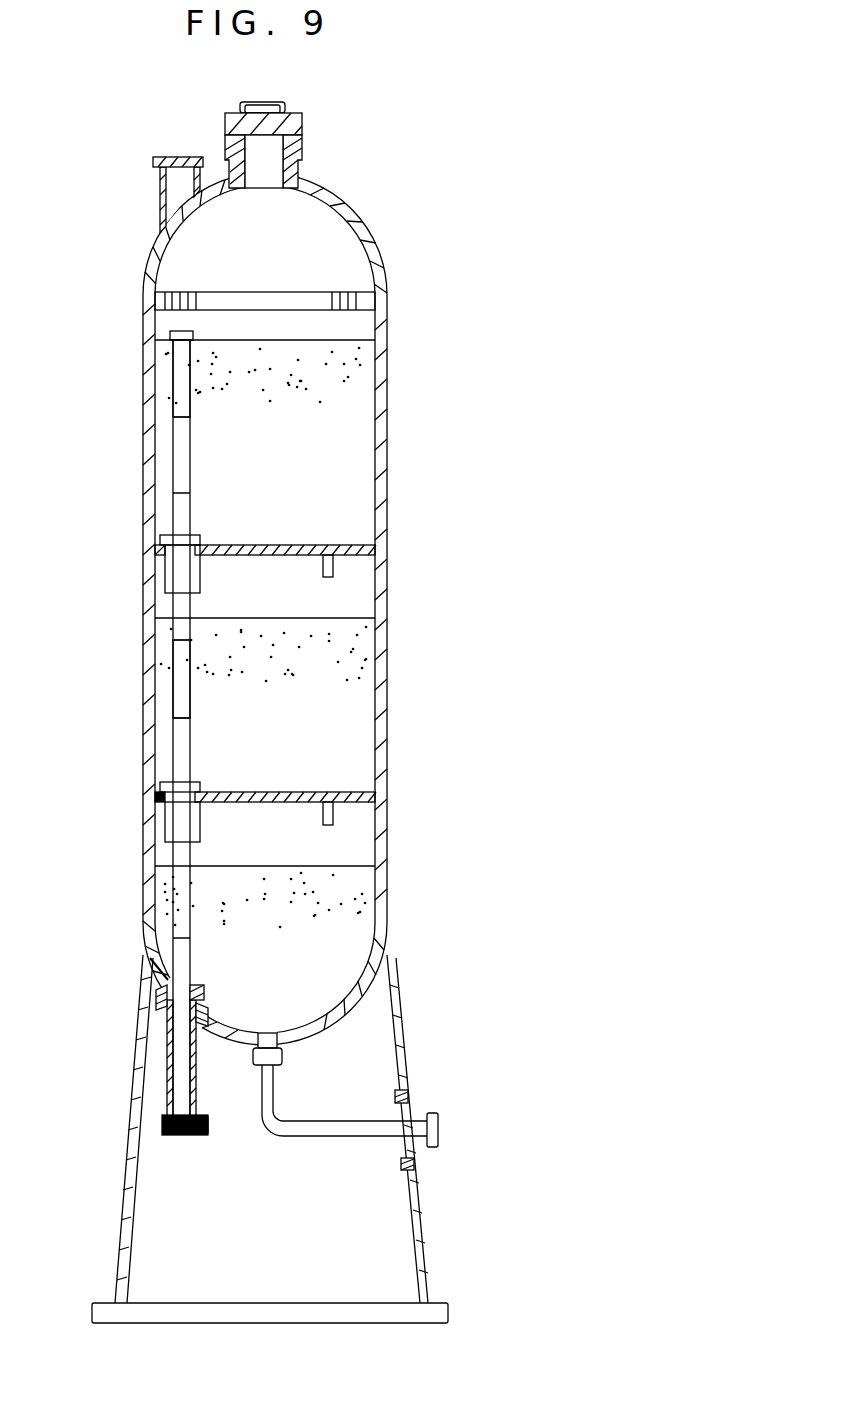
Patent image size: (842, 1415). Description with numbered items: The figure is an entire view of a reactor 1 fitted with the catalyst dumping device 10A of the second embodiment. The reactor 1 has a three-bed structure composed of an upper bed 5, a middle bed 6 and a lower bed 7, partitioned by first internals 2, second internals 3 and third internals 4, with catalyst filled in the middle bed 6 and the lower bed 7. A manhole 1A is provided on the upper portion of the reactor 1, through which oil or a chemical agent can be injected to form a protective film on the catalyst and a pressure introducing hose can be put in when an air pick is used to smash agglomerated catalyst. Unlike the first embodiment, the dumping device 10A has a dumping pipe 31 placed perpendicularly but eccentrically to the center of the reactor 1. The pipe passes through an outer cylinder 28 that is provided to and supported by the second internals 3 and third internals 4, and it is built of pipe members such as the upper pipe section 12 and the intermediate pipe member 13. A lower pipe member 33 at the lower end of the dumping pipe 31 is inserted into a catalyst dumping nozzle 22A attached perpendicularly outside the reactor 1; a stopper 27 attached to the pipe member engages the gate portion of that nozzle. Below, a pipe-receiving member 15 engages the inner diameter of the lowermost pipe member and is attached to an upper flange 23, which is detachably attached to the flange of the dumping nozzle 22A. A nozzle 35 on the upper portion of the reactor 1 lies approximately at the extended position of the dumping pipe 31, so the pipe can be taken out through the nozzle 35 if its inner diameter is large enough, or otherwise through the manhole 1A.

The reactor 1 is at (428, 213).
The manhole 1A is at (302, 128).
The nozzle 35 is at (155, 188).
The dumping device 10A is at (198, 330).
The first internals 2 is at (378, 318).
The upper bed 5 is at (340, 462).
The upper tube segment 12 is at (190, 388).
The dumping pipe 31 is at (190, 470).
The second internals 3 is at (375, 545).
The outer cylinder 28 is at (200, 578).
The intermediate pipe member 13 is at (190, 680).
The middle bed 6 is at (337, 700).
The third internals 4 is at (360, 792).
The lower bed 7 is at (330, 912).
The lower pipe member 33 is at (183, 1037).
The stopper 27 is at (204, 998).
The catalyst dumping nozzle 22A is at (163, 1080).
The pipe-receiving member 15 is at (180, 1137).
The upper flange 23 is at (198, 1137).